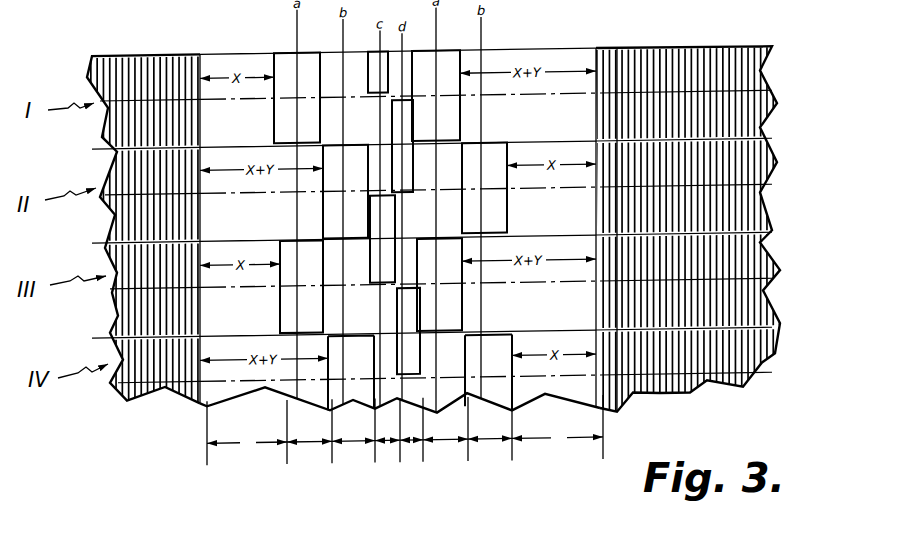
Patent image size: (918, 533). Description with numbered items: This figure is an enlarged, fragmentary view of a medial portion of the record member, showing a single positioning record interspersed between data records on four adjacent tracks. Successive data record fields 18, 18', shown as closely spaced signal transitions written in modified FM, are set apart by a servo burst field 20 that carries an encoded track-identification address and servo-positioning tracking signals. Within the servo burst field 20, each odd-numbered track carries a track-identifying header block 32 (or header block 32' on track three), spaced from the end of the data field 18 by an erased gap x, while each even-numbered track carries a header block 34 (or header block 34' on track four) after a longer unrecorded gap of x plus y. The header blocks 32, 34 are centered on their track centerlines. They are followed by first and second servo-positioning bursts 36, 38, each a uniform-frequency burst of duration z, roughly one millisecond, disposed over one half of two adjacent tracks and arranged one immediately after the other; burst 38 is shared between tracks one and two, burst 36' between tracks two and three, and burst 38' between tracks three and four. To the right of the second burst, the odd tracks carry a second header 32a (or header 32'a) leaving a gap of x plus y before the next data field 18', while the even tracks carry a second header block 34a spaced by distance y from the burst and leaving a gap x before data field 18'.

The data record field 18 is at (143, 208).
The data record field 18' is at (690, 206).
The servo burst field 20 is at (617, 464).
The track-identifying header block 32 is at (297, 97).
The second track-identification header 32a is at (452, 87).
The track-identifying header block 34 is at (345, 192).
The second header block 34a is at (500, 186).
The first servo-positioning burst 36 is at (364, 72).
The second servo-positioning burst 38 is at (386, 146).
The servo-positioning burst 36' is at (403, 239).
The servo-positioning burst 38' is at (388, 331).
The track-identifying header block 32' is at (301, 286).
The second track-identification header 32'a is at (439, 284).
The track-identifying header block 34' is at (351, 373).